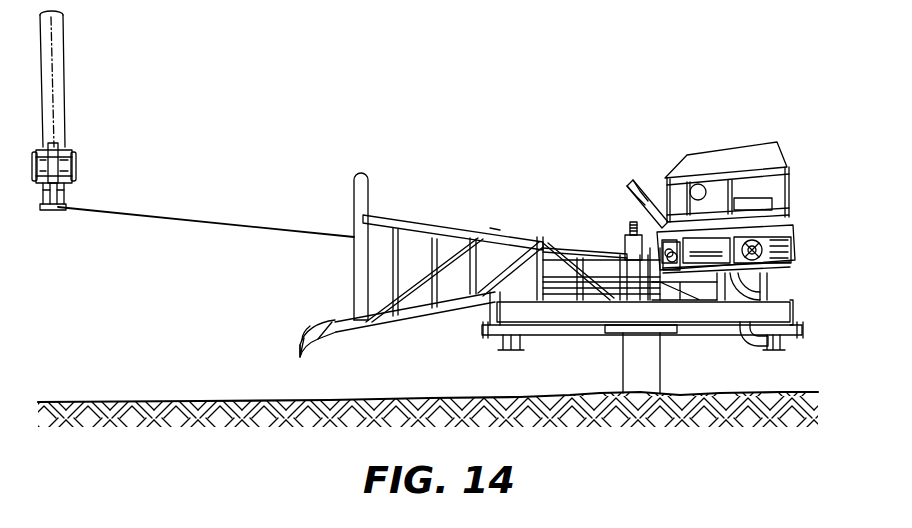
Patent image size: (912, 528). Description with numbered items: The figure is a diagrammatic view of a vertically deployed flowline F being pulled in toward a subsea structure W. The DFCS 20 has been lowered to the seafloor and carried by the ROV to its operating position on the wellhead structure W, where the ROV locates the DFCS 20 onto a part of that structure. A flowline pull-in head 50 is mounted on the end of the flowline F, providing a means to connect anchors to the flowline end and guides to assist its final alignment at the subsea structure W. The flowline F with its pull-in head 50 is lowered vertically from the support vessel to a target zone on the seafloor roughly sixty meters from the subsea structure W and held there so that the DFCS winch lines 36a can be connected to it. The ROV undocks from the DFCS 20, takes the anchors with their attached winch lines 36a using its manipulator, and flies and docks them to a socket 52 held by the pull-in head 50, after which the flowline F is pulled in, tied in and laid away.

The flowline F is at (57, 73).
The flowline pull-in head 50 is at (74, 163).
The socket 52 is at (66, 203).
The DFCS winch lines 36a is at (247, 225).
The element ROV is at (737, 207).
The DFCS 20 is at (794, 255).
The subsea structure W is at (557, 313).